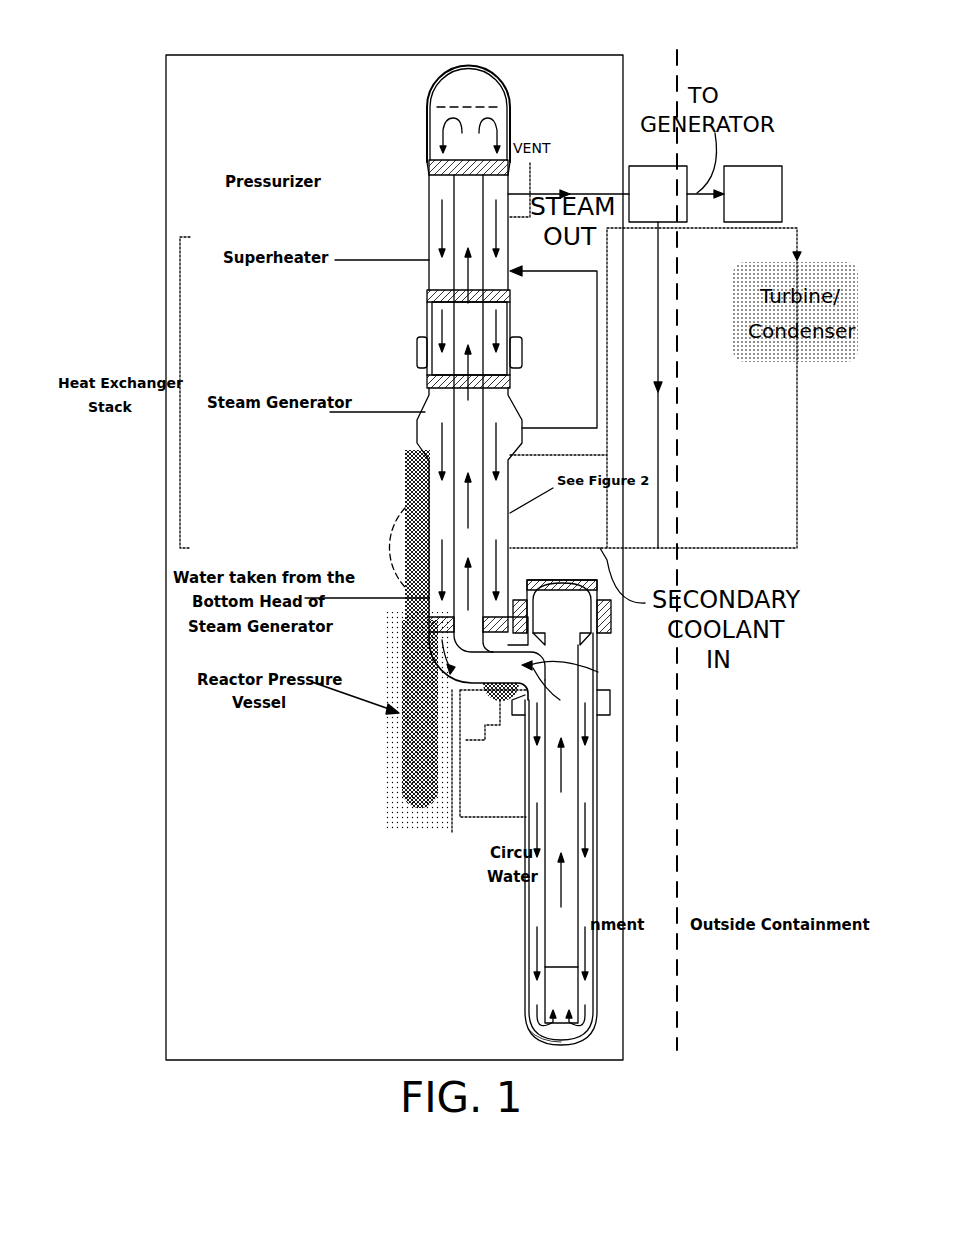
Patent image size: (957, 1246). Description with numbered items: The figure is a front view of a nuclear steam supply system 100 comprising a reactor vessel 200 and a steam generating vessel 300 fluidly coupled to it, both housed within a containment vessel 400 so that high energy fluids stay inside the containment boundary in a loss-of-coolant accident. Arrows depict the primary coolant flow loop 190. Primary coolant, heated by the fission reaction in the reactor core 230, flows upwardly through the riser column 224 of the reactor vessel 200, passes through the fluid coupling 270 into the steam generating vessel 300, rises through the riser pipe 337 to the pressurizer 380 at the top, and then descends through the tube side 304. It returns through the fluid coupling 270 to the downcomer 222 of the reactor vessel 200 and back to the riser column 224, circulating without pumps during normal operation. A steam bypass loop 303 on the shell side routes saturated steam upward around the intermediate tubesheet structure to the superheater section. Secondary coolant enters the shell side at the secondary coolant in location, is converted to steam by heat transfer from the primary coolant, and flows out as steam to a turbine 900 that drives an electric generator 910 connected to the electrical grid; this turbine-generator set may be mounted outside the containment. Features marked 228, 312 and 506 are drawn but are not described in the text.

The nuclear steam supply system 100 is at (545, 112).
The primary coolant flow loop 190 is at (418, 143).
The reactor vessel 200 is at (567, 842).
The downcomer 222 is at (583, 795).
The riser column 224 is at (568, 920).
The bottom head 228 is at (593, 1038).
The reactor core 230 is at (568, 995).
The fluid coupling 270 is at (612, 672).
The steam generating vessel 300 is at (410, 395).
The steam bypass loop 303 is at (597, 342).
The tube side 304 is at (438, 265).
The reactor pressure vessel wall 312 is at (428, 530).
The riser pipe 337 is at (468, 430).
The pressurizer 380 is at (458, 92).
The containment vessel 400 is at (200, 55).
The vessel bottom 506 is at (536, 1023).
The turbine 900 is at (658, 357).
The electric generator 910 is at (753, 194).